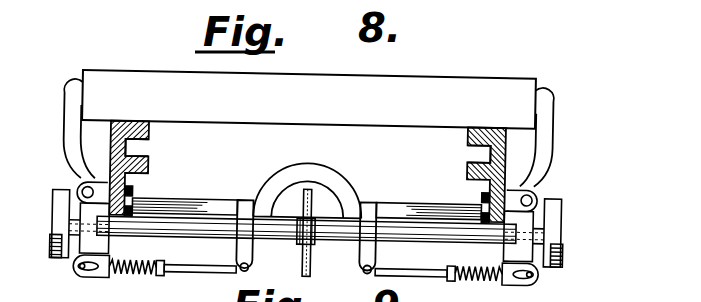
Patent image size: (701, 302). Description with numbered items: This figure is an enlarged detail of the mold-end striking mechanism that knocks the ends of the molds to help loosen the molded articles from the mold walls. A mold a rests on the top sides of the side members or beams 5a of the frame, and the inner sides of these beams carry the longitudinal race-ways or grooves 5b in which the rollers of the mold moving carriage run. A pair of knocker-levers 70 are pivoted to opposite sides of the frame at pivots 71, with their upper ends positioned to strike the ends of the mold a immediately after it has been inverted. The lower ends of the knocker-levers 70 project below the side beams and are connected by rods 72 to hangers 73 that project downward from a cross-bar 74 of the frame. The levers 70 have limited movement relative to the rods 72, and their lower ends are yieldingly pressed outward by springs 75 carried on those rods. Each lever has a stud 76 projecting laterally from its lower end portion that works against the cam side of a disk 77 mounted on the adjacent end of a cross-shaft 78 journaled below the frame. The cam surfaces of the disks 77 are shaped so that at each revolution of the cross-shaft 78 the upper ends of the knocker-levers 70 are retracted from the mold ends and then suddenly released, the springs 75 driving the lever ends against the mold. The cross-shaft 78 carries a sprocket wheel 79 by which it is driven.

The mold a is at (309, 99).
The side members or beams 5a is at (128, 122).
The race-ways or grooves 5b is at (143, 148).
The knocker-levers 70 is at (66, 150).
The pivots 71 is at (83, 188).
The rods 72 is at (195, 272).
The hangers 73 is at (239, 251).
The cross-bar 74 is at (205, 207).
The springs 75 is at (127, 276).
The stud 76 is at (54, 240).
The disk 77 is at (58, 212).
The cross-shaft 78 is at (346, 241).
The sprocket wheel 79 is at (306, 209).